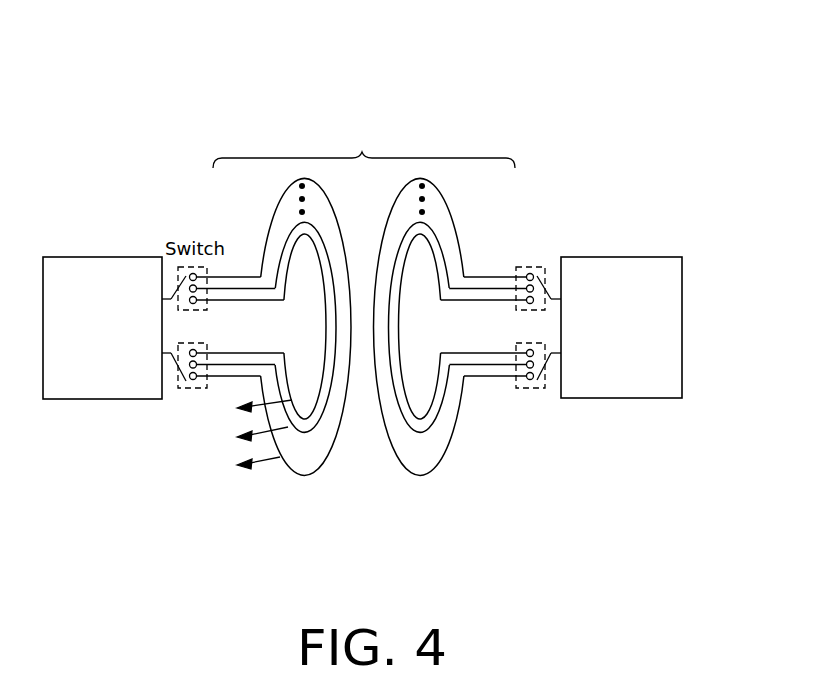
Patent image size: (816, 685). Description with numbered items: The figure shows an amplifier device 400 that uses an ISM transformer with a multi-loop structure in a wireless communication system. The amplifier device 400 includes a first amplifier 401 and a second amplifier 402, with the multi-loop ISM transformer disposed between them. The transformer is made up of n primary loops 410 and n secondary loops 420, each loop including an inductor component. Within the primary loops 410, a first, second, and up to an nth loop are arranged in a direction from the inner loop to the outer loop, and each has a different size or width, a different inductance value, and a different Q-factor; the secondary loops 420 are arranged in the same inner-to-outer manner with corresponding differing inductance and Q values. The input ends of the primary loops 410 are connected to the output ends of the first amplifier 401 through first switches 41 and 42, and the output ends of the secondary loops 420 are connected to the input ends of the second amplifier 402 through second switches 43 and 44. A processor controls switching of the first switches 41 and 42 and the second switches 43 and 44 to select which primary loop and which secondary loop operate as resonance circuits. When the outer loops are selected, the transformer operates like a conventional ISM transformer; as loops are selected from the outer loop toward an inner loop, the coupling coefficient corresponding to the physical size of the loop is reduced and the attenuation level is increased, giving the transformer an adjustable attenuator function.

The amplifier device 400 is at (392, 97).
The first amplifier 401 is at (103, 257).
The second amplifier 402 is at (621, 257).
The first switch 41 is at (207, 305).
The first switch 42 is at (207, 346).
The second switch 43 is at (516, 307).
The second switch 44 is at (516, 347).
The primary loops 410 is at (266, 542).
The secondary loops 420 is at (454, 542).